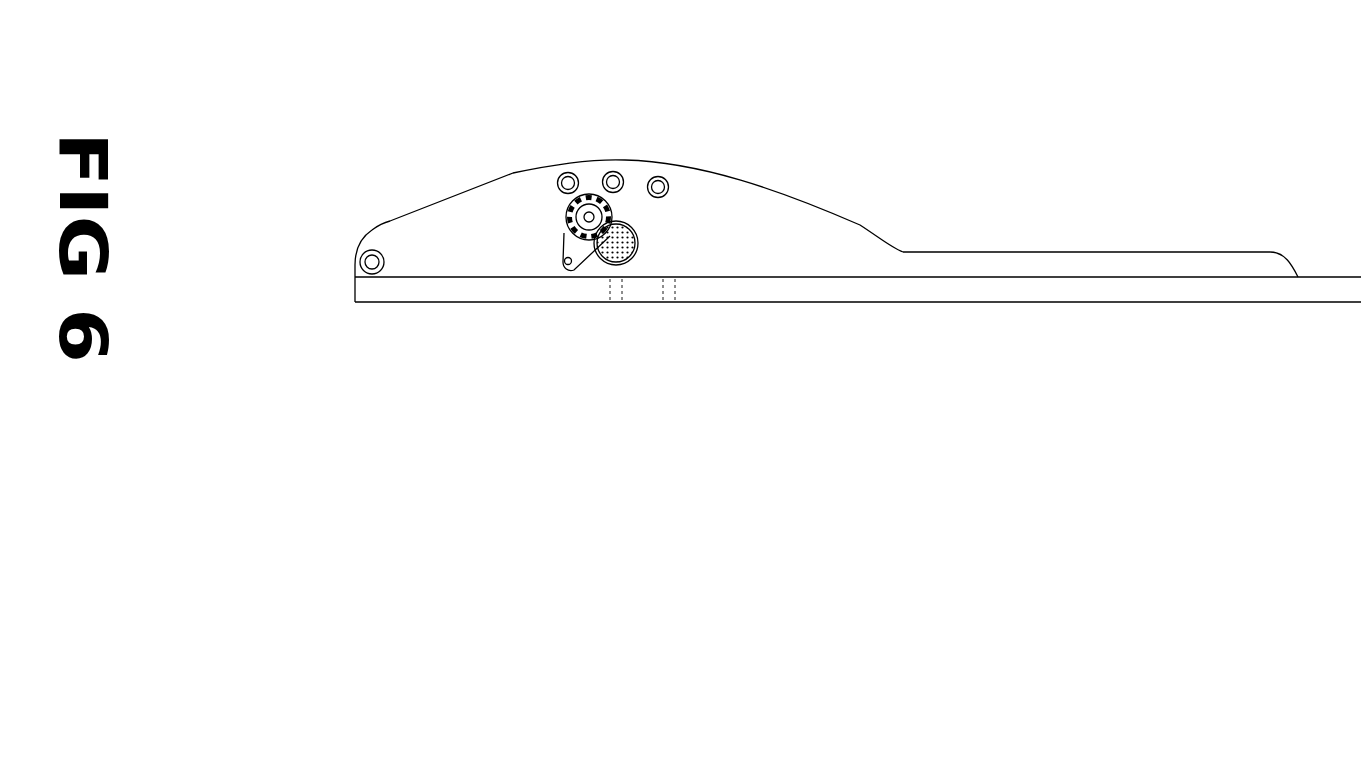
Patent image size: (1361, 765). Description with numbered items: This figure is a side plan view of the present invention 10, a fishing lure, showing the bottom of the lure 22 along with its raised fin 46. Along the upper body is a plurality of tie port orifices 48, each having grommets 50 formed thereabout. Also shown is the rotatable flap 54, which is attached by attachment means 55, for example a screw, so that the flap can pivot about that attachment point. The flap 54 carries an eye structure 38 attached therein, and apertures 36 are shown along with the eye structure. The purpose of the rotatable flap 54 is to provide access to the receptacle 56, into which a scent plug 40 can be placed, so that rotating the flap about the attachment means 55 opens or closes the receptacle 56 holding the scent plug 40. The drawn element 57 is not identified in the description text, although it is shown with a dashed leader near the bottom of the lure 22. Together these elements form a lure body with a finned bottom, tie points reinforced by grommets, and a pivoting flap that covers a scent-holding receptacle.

The present invention 10 is at (418, 222).
The lure 22 is at (998, 304).
The apertures 36 is at (566, 212).
The eye structure 38 is at (590, 194).
The scent plug 40 is at (634, 250).
The raised fin 46 is at (841, 248).
The tie port orifices 48 is at (660, 186).
The grommets 50 is at (667, 187).
The rotatable flap 54 is at (570, 246).
The attachment means 55 is at (565, 263).
The receptacle 56 is at (638, 237).
The hidden slot 57 is at (672, 292).